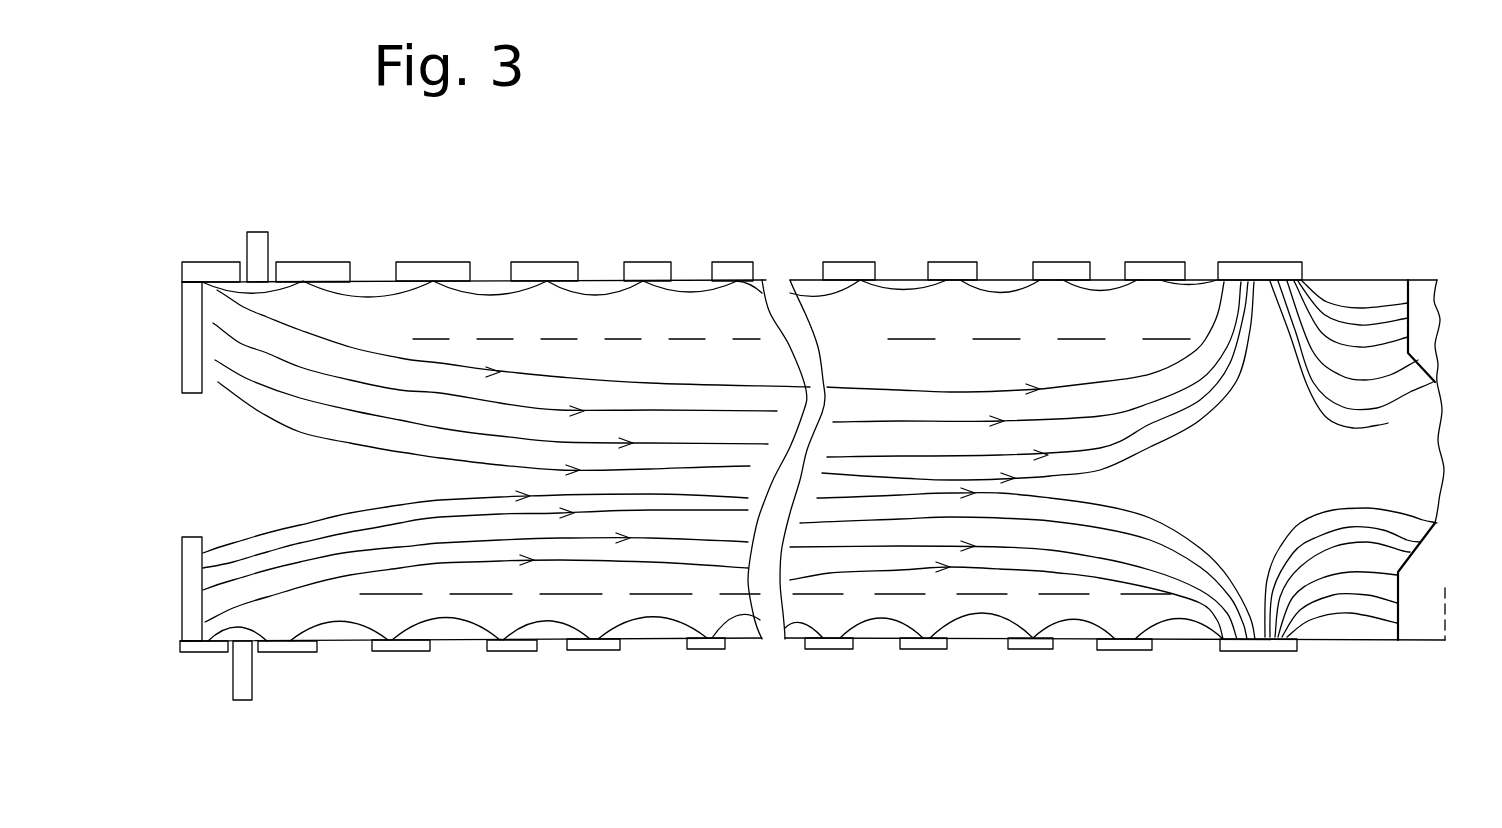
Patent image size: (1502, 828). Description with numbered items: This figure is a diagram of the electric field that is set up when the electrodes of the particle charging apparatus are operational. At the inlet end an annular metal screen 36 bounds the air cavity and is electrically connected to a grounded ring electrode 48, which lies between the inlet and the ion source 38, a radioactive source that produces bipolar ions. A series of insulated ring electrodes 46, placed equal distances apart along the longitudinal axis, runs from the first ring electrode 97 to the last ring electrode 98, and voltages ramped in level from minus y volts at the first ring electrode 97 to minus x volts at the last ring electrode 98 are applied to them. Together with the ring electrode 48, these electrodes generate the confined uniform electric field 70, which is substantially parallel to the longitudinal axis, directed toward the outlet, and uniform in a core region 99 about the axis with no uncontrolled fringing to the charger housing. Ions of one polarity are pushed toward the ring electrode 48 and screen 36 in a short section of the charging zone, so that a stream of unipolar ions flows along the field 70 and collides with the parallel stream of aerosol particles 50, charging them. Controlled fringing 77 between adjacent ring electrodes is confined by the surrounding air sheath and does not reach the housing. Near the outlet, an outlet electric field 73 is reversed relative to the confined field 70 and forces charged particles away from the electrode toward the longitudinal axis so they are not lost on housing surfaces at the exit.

The annular metal screen 36 is at (190, 307).
The ring electrode 48 is at (215, 272).
The ion source 38 is at (257, 240).
The last ring electrode 98 is at (330, 268).
The insulated ring electrodes 46 is at (1273, 250).
The confined uniform electric field 70 is at (695, 423).
The core region 99 is at (910, 352).
The first ring electrode 97 is at (1282, 262).
The stream of aerosol particles 50 is at (1422, 293).
The outlet electric field 73 is at (1387, 428).
The controlled fringing 77 is at (880, 620).